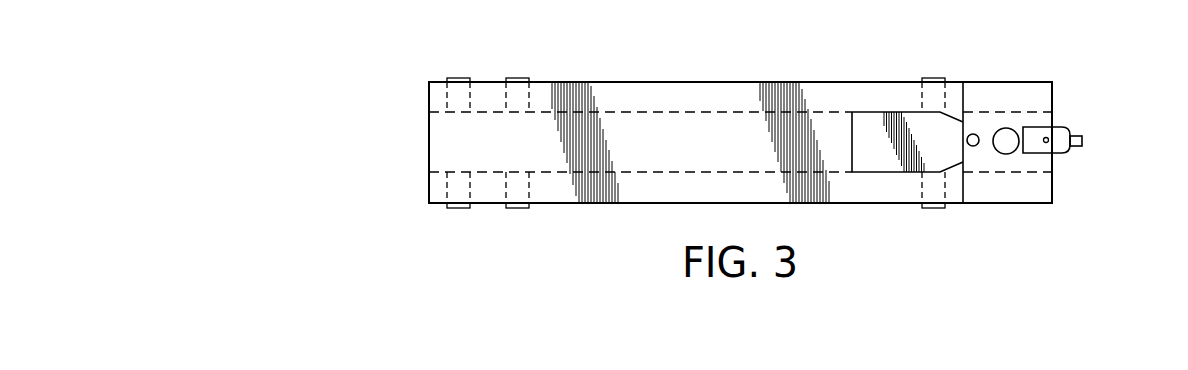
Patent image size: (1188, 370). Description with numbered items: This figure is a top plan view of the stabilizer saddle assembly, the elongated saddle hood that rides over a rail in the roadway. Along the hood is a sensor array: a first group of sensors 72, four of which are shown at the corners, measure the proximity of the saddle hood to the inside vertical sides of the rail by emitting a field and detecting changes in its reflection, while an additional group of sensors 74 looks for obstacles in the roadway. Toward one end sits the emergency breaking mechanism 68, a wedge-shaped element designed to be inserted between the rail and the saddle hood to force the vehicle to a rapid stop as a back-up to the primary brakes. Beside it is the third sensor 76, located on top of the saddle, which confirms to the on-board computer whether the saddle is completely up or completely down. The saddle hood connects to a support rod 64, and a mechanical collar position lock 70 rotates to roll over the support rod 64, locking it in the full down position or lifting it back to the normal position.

The first group of sensors 72 is at (455, 78).
The additional group of sensors 74 is at (513, 78).
The emergency breaking mechanism 68 is at (886, 162).
The third sensor 76 is at (972, 134).
The support rod 64 is at (1005, 128).
The mechanical collar position lock 70 is at (1092, 118).